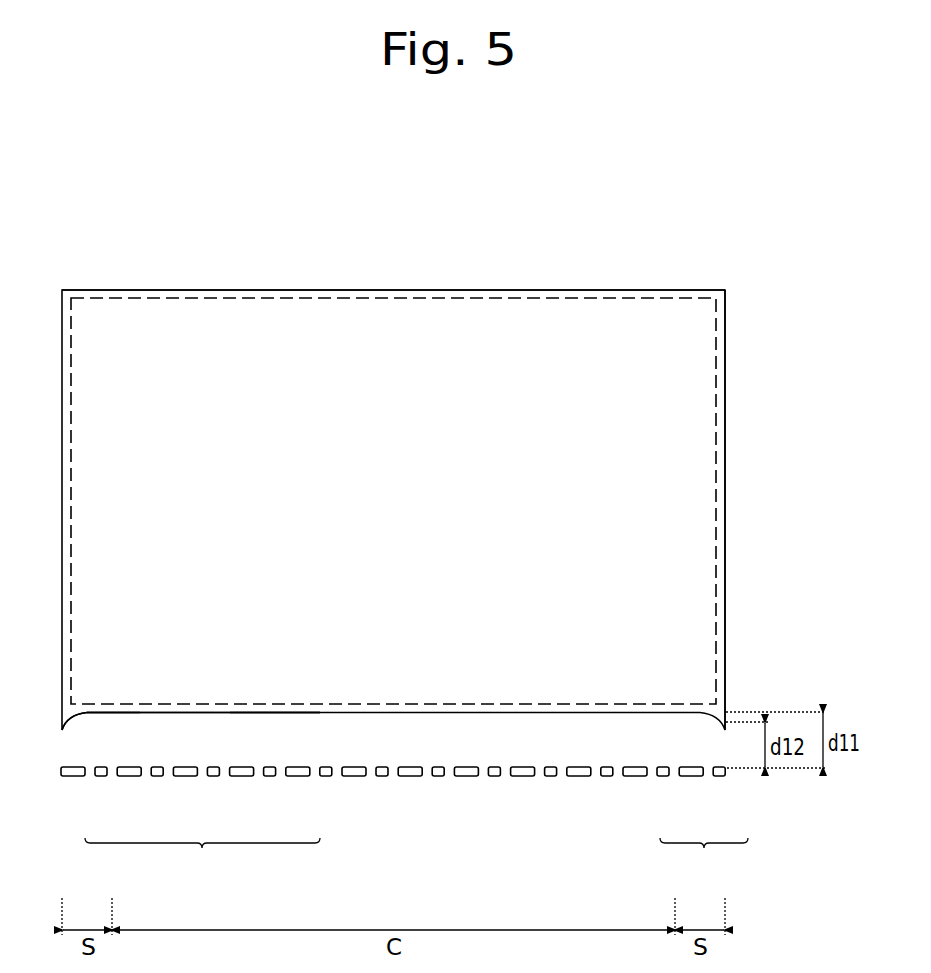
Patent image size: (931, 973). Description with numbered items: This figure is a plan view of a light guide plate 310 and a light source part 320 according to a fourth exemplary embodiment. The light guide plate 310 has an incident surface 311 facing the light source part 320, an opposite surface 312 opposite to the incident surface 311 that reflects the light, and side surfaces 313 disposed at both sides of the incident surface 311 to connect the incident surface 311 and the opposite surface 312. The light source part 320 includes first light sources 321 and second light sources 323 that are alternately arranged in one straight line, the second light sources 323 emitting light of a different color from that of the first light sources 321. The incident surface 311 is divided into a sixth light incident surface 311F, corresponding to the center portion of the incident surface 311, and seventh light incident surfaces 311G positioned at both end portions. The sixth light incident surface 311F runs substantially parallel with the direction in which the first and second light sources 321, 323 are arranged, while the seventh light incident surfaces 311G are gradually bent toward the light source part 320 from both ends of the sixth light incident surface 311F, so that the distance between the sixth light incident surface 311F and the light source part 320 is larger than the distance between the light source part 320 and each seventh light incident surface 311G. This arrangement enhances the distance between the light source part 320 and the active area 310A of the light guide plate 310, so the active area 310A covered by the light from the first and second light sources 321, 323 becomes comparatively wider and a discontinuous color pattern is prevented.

The light guide plate 310 is at (667, 285).
The active area 310A is at (555, 298).
The opposite surface 312 is at (445, 289).
The side surfaces 313 is at (726, 511).
The incident surface 311 is at (202, 796).
The seventh light incident surfaces 311G is at (83, 713).
The sixth light incident surface 311F is at (265, 713).
The light source part 320 is at (404, 822).
The first light sources 321 is at (691, 778).
The second light sources 323 is at (718, 778).